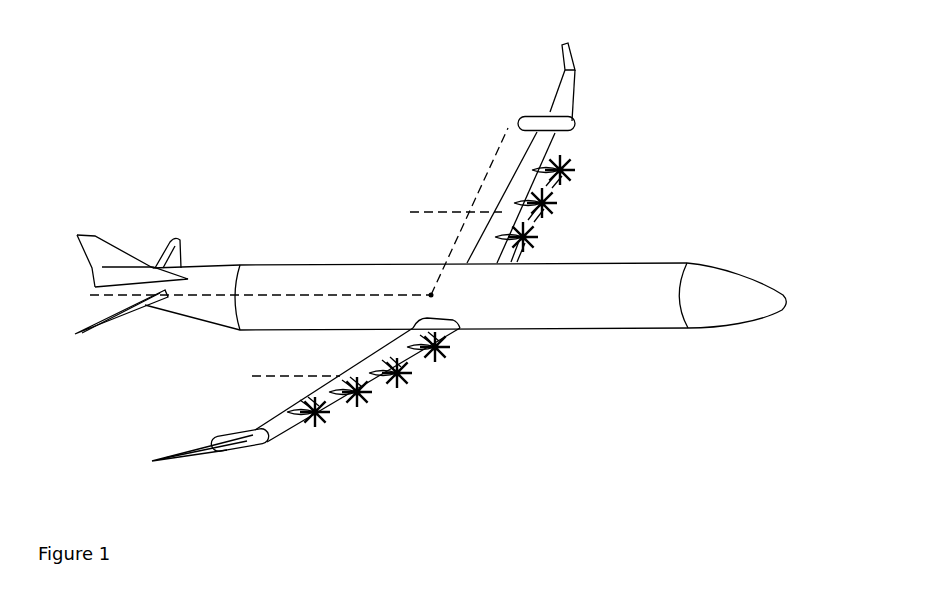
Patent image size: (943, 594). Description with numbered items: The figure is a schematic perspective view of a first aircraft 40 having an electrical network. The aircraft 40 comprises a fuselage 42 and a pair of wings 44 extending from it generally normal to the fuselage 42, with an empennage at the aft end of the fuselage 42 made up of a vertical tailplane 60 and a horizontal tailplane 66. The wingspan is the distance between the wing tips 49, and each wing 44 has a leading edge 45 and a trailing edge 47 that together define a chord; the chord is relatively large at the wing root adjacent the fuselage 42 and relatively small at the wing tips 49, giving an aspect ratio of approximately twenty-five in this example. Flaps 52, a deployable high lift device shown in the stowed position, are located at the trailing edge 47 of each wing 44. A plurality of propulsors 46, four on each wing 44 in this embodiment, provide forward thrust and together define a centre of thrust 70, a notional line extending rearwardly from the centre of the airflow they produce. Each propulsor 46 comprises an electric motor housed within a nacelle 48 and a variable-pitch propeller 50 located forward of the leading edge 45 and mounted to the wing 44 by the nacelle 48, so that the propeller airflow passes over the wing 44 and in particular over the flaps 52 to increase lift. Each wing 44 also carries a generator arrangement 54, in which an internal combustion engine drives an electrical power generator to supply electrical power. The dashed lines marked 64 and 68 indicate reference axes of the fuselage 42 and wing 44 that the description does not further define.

The aircraft 40 is at (223, 172).
The fuselage 42 is at (572, 310).
The wing 44 is at (535, 152).
The leading edge 45 is at (572, 92).
The propulsor 46 is at (550, 200).
The trailing edge 47 is at (553, 98).
The nacelle 48 is at (389, 378).
The wing tip 49 is at (563, 45).
The propeller 50 is at (447, 363).
The flaps 52 is at (372, 353).
The generator arrangement 54 is at (520, 127).
The vertical tailplane 60 is at (110, 247).
The longitudinal axis 64 is at (262, 295).
The horizontal tailplane 66 is at (122, 323).
The wing dihedral axis 68 is at (482, 183).
The centre of thrust 70 is at (412, 213).